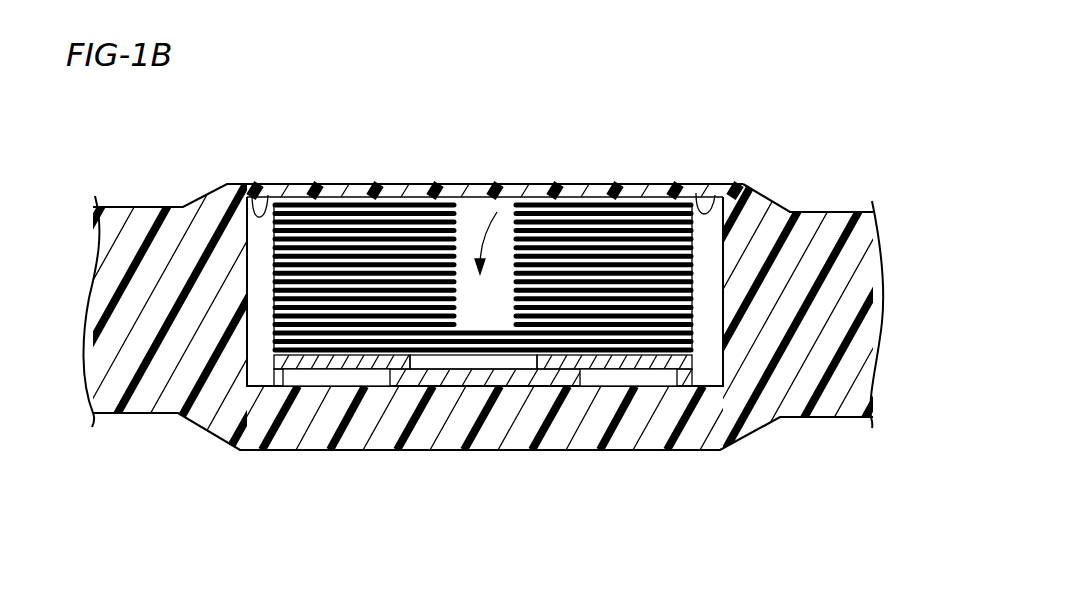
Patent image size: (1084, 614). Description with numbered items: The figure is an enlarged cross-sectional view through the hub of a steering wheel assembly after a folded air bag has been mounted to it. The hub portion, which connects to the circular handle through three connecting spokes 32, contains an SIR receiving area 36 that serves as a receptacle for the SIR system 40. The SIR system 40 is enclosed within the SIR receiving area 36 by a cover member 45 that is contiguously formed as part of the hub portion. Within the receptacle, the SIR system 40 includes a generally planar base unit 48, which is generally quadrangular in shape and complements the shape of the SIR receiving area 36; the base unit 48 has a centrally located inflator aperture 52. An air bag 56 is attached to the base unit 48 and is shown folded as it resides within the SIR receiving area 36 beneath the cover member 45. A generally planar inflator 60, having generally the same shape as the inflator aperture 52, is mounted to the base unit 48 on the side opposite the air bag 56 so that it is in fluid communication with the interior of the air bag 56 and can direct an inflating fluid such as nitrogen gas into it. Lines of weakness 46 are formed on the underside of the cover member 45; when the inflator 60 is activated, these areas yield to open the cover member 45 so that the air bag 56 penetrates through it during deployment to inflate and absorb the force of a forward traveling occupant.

The connecting spokes 32 is at (876, 210).
The SIR receiving area 36 is at (712, 372).
The SIR system 40 is at (512, 198).
The cover member 45 is at (694, 187).
The lines of weakness 46 is at (477, 185).
The base unit 48 is at (340, 362).
The inflator aperture 52 is at (548, 364).
The air bag 56 is at (637, 253).
The inflator 60 is at (457, 372).